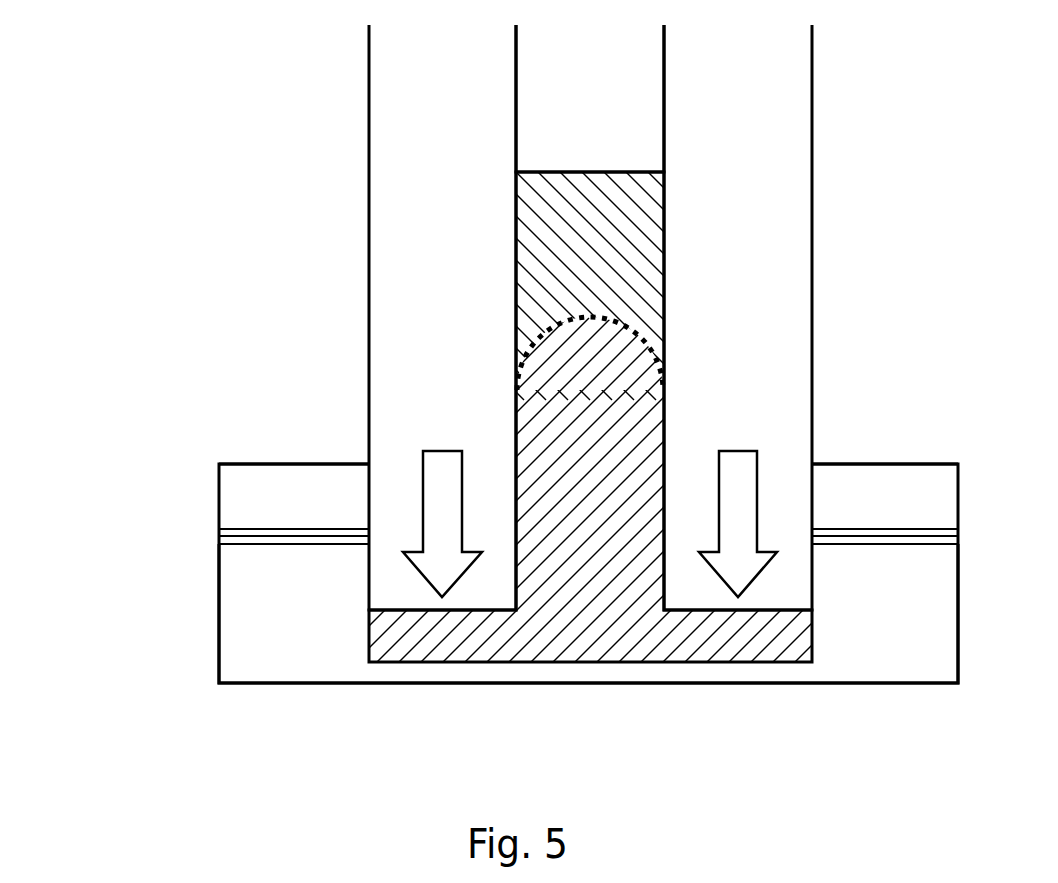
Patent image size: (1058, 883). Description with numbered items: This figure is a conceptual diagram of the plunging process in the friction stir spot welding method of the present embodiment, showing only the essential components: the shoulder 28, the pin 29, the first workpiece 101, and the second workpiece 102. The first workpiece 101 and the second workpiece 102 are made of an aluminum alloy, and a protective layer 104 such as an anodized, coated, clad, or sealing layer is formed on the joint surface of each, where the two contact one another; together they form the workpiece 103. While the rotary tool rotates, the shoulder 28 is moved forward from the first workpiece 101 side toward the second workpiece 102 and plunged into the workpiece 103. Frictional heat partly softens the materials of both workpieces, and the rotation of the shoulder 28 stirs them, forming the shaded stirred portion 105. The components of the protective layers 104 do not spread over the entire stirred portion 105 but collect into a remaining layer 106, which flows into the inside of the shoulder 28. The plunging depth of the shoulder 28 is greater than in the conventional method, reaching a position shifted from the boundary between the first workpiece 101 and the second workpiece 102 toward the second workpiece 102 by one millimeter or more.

The shoulder 28 is at (456, 107).
The pin 29 is at (602, 107).
The first workpiece 101 is at (214, 496).
The second workpiece 102 is at (541, 613).
The workpiece 103 is at (500, 573).
The protective layer 104 is at (219, 530).
The stirred portion 105 is at (586, 633).
The remaining layer 106 is at (640, 336).